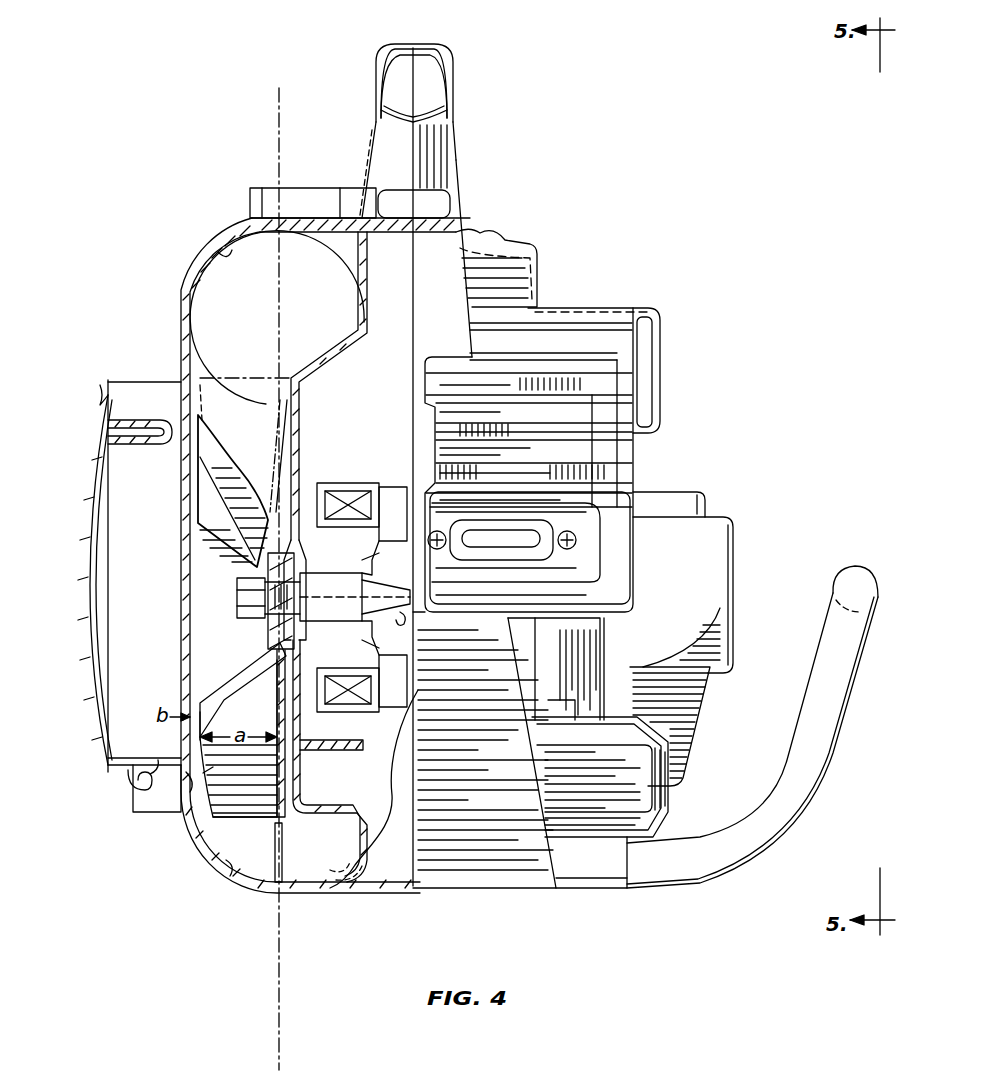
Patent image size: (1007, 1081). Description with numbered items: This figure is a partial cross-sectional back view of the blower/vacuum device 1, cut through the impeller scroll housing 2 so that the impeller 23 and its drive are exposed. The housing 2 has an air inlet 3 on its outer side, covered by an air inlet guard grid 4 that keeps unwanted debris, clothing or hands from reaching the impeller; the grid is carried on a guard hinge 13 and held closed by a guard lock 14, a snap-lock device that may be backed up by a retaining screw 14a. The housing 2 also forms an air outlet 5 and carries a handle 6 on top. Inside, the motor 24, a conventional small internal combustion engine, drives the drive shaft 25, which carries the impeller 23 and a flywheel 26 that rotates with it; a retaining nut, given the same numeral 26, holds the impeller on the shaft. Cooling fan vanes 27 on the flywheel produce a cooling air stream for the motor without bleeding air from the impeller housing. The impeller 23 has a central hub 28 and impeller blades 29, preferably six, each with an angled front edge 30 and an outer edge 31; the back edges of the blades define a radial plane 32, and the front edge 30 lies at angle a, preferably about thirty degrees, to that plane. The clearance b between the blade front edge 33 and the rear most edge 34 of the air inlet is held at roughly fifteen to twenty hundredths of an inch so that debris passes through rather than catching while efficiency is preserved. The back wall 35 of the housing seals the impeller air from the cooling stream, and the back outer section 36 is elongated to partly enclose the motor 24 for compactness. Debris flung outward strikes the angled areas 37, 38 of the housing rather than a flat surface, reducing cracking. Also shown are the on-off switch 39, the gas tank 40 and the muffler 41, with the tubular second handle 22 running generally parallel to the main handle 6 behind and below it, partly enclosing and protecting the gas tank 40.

The blower/vacuum device 1 is at (605, 246).
The impeller scroll housing 2 is at (180, 293).
The air inlet 3 is at (145, 804).
The air inlet guard grid 4 is at (84, 605).
The air outlet 5 is at (277, 371).
The handle 6 is at (430, 48).
The guard hinge 13 is at (133, 778).
The guard lock 14 is at (106, 424).
The retaining screw 14a is at (104, 392).
The second handle 22 is at (862, 580).
The impeller 23 is at (228, 798).
The motor 24 is at (590, 622).
The drive shaft 25 is at (406, 624).
The flywheel 26 is at (322, 486).
The cooling fan vanes 27 is at (392, 492).
The central hub 28 is at (266, 614).
The impeller blades 29 is at (205, 505).
The angled front edge 30 is at (205, 690).
The outer edge 31 is at (266, 828).
The radial plane 32 is at (279, 128).
The front edge 33 is at (205, 778).
The rear most edge of the air inlet 34 is at (187, 790).
The back wall 35 is at (302, 430).
The back outer section 36 is at (368, 270).
The housing impingement area 37 is at (222, 256).
The housing impingement area 38 is at (228, 866).
The on-off switch 39 is at (495, 235).
The gas tank 40 is at (636, 798).
The muffler 41 is at (570, 508).